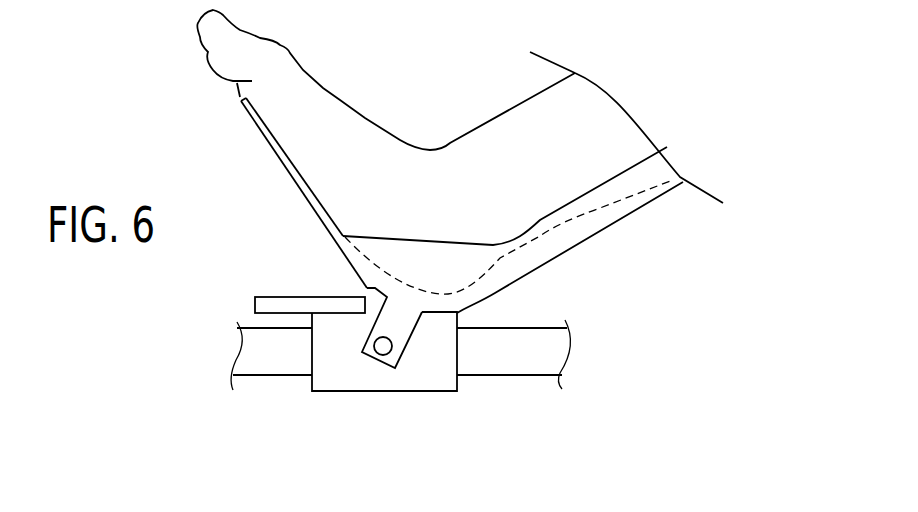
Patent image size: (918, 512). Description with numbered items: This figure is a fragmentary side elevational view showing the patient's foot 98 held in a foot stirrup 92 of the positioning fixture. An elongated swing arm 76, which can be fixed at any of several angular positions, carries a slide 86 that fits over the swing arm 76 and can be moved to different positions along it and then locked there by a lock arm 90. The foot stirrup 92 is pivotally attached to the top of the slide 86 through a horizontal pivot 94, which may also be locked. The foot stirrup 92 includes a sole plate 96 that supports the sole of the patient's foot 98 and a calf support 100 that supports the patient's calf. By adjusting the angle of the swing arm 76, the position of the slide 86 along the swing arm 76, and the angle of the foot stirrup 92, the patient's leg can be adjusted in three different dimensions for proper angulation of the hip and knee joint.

The swing arm 76 is at (539, 363).
The slide 86 is at (433, 378).
The lock arm 90 is at (312, 297).
The foot stirrup 92 is at (697, 238).
The horizontal pivot 94 is at (382, 350).
The sole plate 96 is at (257, 135).
The patient's foot 98 is at (315, 105).
The calf support 100 is at (588, 242).